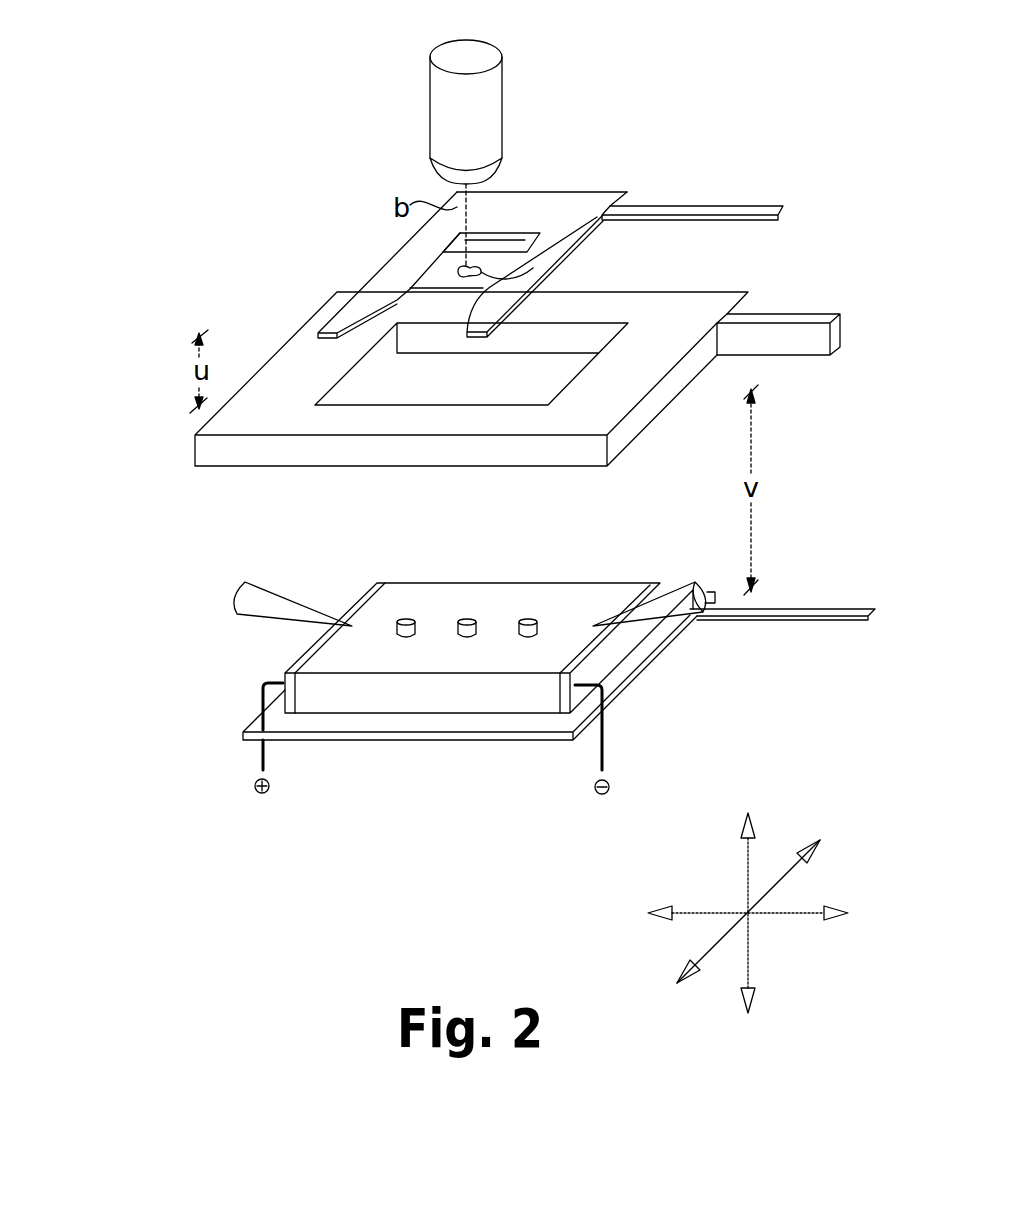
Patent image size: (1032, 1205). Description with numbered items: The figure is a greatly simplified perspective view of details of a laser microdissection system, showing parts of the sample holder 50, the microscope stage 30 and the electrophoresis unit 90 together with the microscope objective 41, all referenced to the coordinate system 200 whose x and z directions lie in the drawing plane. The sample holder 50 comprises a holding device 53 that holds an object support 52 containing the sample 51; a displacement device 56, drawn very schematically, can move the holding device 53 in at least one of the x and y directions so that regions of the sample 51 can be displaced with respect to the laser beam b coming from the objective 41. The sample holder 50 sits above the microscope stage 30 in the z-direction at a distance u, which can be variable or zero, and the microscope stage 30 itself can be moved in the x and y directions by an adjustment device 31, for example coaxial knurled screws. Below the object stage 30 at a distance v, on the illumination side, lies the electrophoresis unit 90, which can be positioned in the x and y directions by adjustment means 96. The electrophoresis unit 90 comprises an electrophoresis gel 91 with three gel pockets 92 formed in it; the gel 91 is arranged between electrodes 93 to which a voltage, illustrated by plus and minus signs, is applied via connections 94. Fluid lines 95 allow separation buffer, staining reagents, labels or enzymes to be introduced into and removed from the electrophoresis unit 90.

The microscope objective 41 is at (447, 102).
The sample holder 50 is at (509, 219).
The sample 51 is at (577, 235).
The object support 52 is at (500, 260).
The holding device 53 is at (410, 263).
The displacement device 56 is at (700, 207).
The microscope stage 30 is at (452, 352).
The adjustment device 31 is at (797, 315).
The electrophoresis unit 90 is at (463, 662).
The electrophoresis gel 91 is at (427, 702).
The gel pockets 92 is at (410, 617).
The electrodes 93 is at (282, 682).
The connections 94 is at (263, 743).
The fluid lines 95 is at (263, 597).
The adjustment means 96 is at (767, 610).
The coordinate system 200 is at (608, 872).